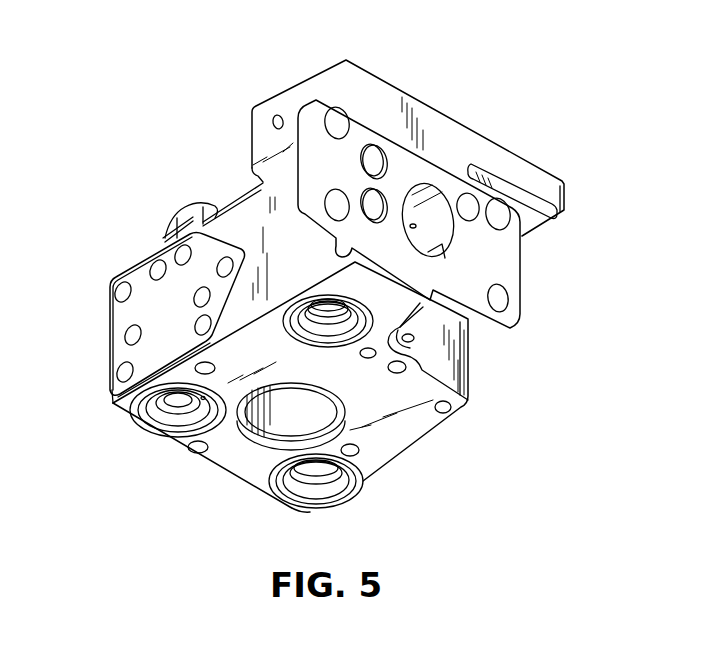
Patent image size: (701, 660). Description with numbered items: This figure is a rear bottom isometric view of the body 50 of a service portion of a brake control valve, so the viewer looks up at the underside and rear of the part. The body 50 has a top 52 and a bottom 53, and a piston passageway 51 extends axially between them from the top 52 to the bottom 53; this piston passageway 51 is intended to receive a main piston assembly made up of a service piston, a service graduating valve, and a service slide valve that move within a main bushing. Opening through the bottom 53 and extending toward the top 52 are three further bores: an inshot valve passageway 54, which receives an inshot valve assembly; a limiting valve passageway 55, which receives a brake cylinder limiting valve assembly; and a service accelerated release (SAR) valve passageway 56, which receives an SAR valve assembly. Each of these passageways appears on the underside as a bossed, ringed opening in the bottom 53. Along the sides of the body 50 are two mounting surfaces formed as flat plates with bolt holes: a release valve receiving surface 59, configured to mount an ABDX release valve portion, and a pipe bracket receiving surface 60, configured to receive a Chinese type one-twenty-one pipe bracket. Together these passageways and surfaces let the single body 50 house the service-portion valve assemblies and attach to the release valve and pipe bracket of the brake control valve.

The body 50 is at (114, 211).
The piston passageway 51 is at (277, 420).
The top 52 is at (252, 183).
The bottom 53 is at (427, 423).
The inshot valve passageway 54 is at (345, 298).
The limiting valve passageway 55 is at (162, 406).
The service accelerated release (SAR) valve passageway 56 is at (343, 497).
The release valve receiving surface 59 is at (123, 318).
The pipe bracket receiving surface 60 is at (432, 173).